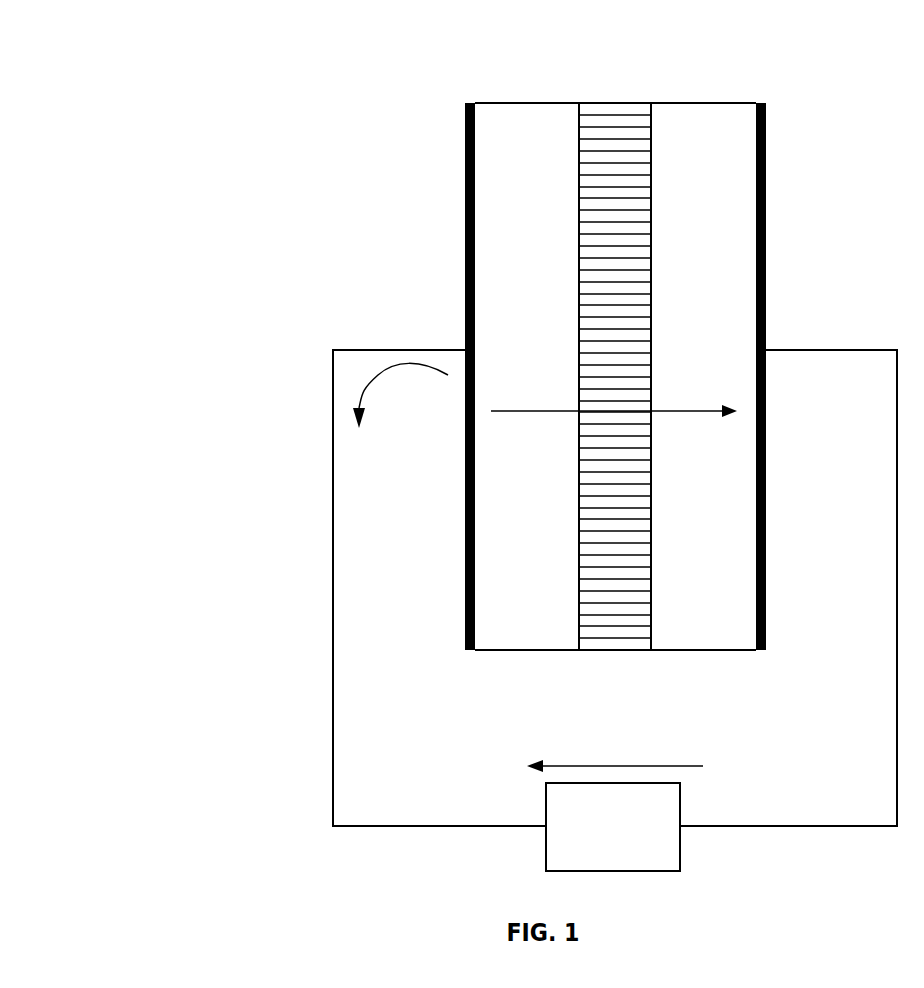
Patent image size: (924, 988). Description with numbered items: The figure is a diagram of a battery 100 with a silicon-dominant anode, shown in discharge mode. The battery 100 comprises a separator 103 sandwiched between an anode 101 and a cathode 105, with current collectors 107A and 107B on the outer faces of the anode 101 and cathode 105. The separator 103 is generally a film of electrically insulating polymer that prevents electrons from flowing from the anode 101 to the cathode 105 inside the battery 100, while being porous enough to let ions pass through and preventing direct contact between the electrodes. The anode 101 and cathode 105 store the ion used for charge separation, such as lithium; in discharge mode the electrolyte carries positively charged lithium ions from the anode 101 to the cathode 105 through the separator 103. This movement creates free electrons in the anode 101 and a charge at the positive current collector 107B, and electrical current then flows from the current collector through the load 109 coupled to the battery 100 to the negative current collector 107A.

The battery 100 is at (150, 191).
The anode 101 is at (507, 314).
The separator 103 is at (618, 103).
The cathode 105 is at (683, 314).
The negative current collector 107A is at (459, 110).
The positive current collector 107B is at (767, 125).
The load 109 is at (593, 851).